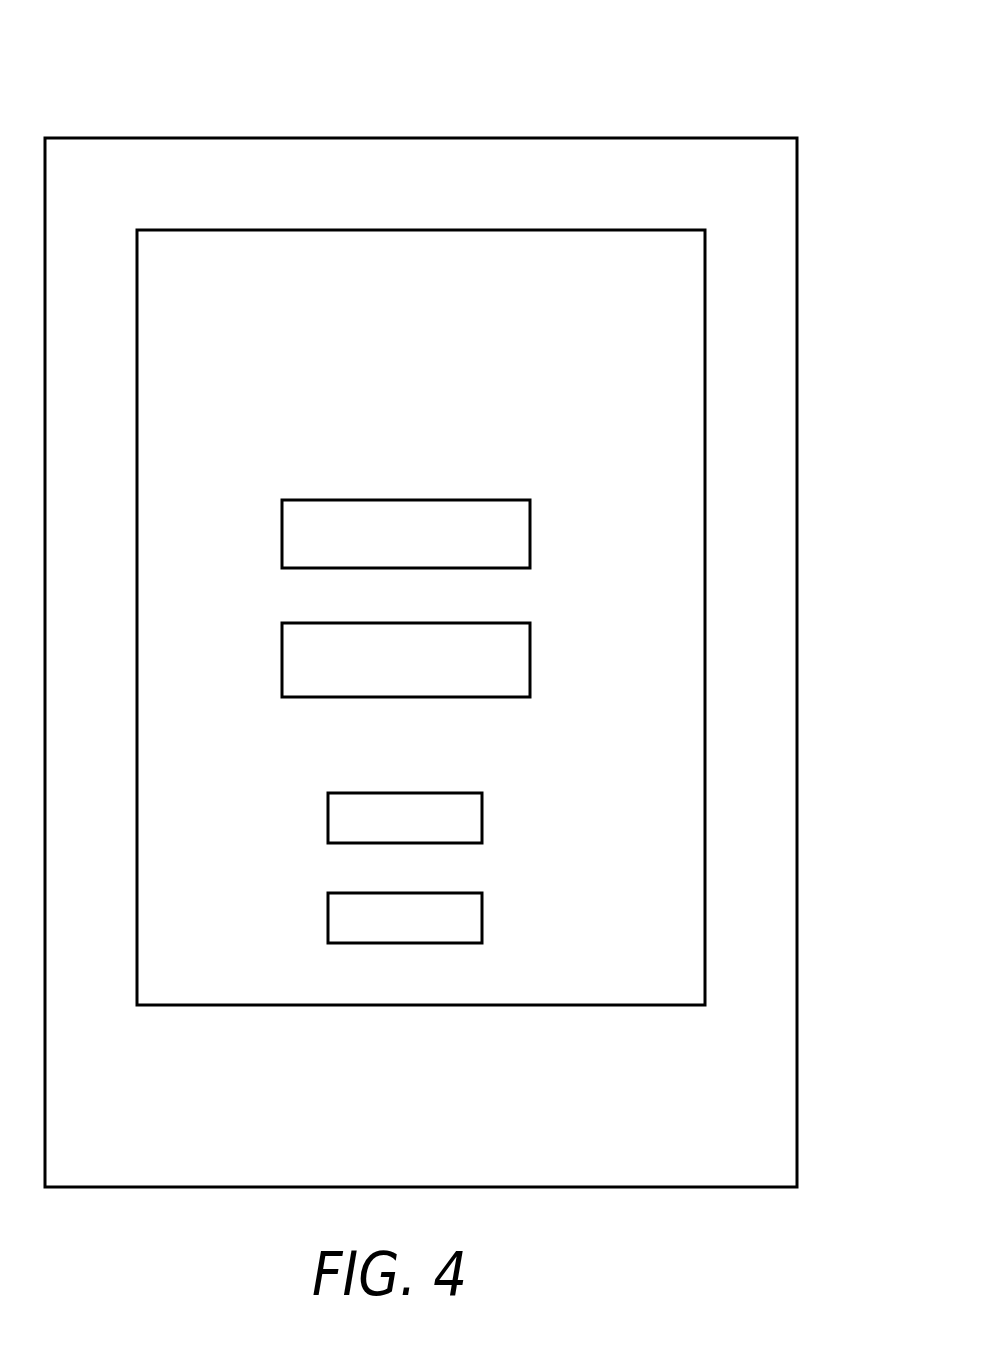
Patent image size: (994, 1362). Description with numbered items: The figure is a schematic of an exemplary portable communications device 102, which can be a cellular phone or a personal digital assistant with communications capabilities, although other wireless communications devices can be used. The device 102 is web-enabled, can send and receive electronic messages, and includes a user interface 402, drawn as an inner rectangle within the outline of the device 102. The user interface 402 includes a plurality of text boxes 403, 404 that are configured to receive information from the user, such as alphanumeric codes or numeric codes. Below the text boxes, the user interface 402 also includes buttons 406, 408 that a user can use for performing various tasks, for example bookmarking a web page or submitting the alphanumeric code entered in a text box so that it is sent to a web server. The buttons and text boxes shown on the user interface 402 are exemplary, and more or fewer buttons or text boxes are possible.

The portable communications device 102 is at (688, 138).
The user interface 402 is at (422, 230).
The text box 403 is at (530, 537).
The text box 404 is at (530, 662).
The button 406 is at (482, 820).
The button 408 is at (482, 920).